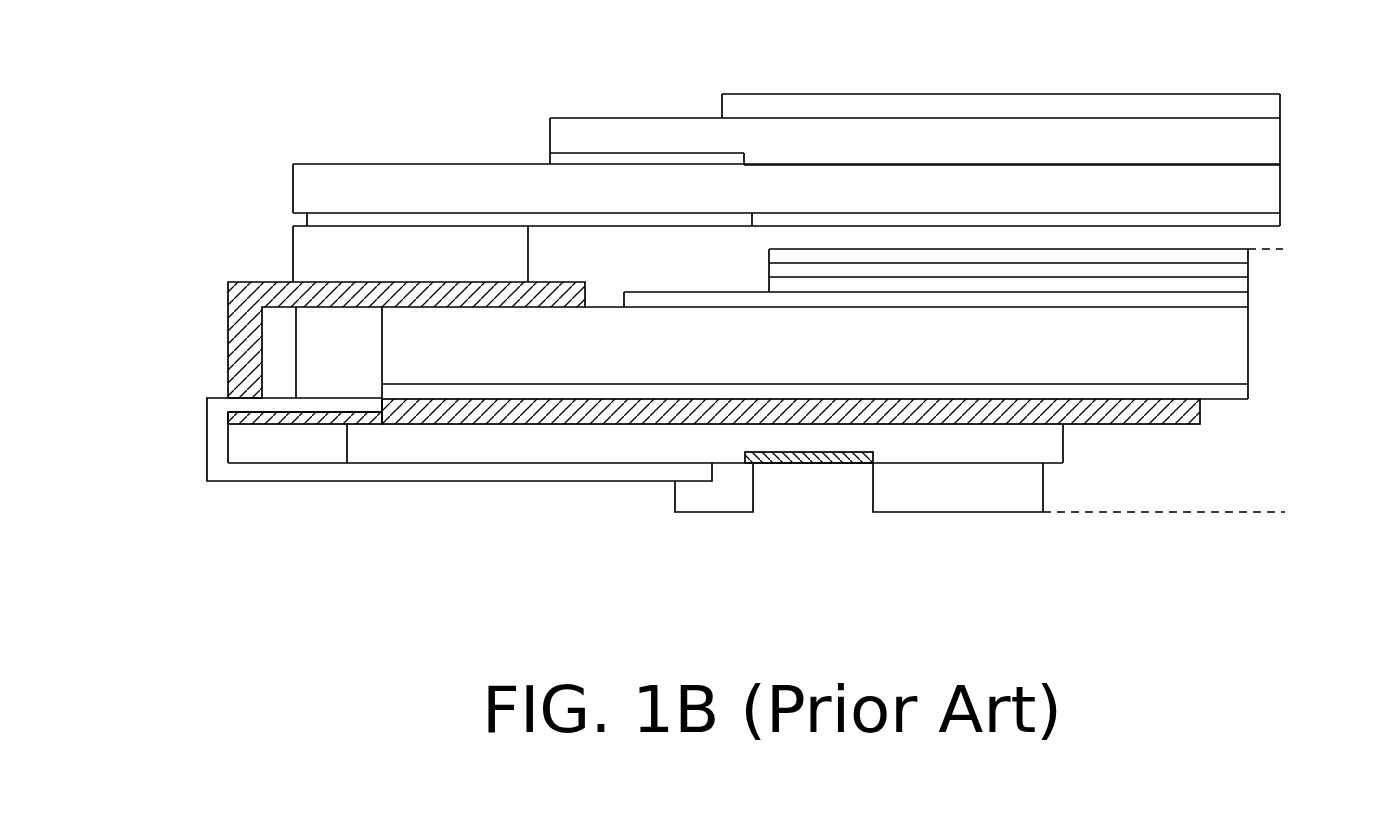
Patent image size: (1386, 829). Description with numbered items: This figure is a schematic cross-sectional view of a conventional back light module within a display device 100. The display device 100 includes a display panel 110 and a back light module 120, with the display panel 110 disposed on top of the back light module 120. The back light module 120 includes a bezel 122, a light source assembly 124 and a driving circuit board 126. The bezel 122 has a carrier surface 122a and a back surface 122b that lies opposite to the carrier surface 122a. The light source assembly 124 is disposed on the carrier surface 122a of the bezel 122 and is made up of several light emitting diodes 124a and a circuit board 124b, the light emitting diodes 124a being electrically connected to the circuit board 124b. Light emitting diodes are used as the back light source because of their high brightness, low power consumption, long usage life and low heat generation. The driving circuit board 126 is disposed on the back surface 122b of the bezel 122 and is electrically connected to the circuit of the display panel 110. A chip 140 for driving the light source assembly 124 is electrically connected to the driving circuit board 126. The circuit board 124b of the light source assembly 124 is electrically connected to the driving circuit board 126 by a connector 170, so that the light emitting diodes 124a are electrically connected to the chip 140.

The display device 100 is at (1385, 614).
The display panel 110 is at (1283, 94).
The back light module 120 is at (1285, 249).
The bezel 122 is at (228, 303).
The carrier surface 122a is at (286, 396).
The back surface 122b is at (1106, 425).
The light source assembly 124 is at (427, 542).
The light emitting diodes 124a is at (373, 385).
The circuit board 124b is at (248, 403).
The driving circuit board 126 is at (602, 440).
The chip 140 is at (945, 495).
The connector 170 is at (715, 495).